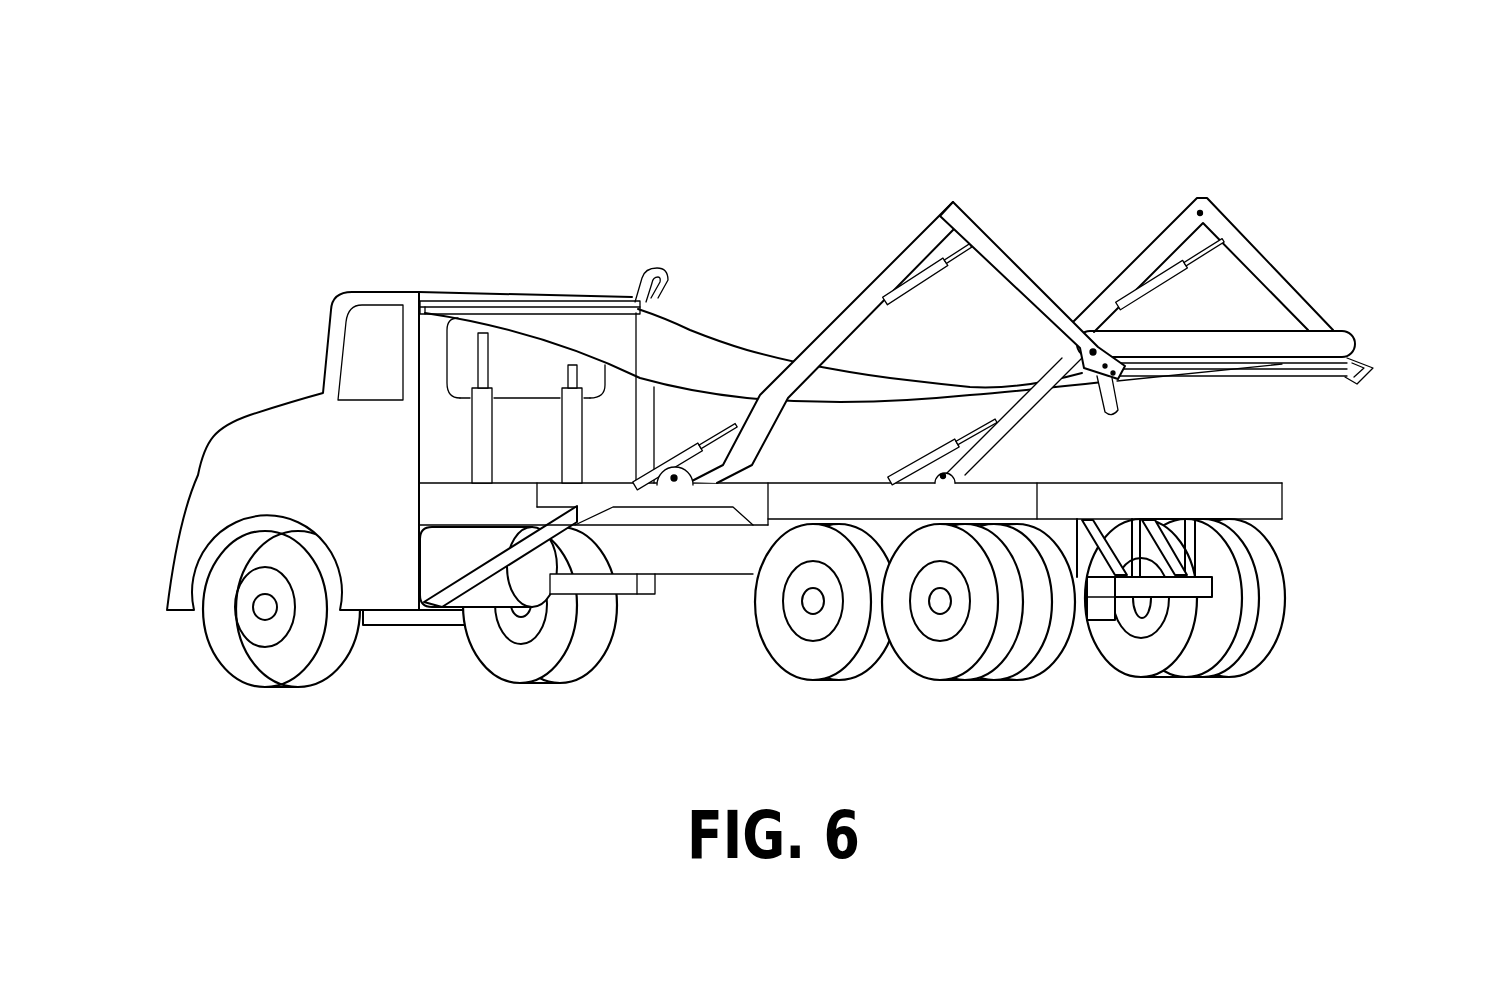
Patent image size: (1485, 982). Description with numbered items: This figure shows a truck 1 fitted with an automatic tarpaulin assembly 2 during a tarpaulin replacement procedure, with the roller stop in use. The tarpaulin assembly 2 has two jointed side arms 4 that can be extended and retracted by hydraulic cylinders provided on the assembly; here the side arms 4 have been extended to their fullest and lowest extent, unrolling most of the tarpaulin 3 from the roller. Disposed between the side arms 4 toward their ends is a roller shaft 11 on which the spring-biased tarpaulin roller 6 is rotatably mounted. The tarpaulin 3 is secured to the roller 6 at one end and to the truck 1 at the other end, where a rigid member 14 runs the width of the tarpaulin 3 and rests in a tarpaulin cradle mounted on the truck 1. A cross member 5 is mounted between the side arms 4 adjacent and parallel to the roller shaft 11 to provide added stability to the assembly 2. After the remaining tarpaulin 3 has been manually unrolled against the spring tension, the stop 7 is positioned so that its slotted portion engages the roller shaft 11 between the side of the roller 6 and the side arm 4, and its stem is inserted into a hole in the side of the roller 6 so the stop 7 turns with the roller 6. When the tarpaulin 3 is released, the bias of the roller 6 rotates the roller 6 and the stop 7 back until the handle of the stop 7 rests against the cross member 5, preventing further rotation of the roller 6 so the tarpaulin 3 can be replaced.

The truck 1 is at (300, 300).
The tarpaulin assembly 2 is at (950, 184).
The tarpaulin 3 is at (748, 362).
The side arms 4 is at (1023, 278).
The cross member 5 is at (1282, 364).
The tarpaulin roller 6 is at (1339, 342).
The stop 7 is at (1117, 410).
The roller shaft 11 is at (1085, 352).
The rigid member 14 is at (517, 307).